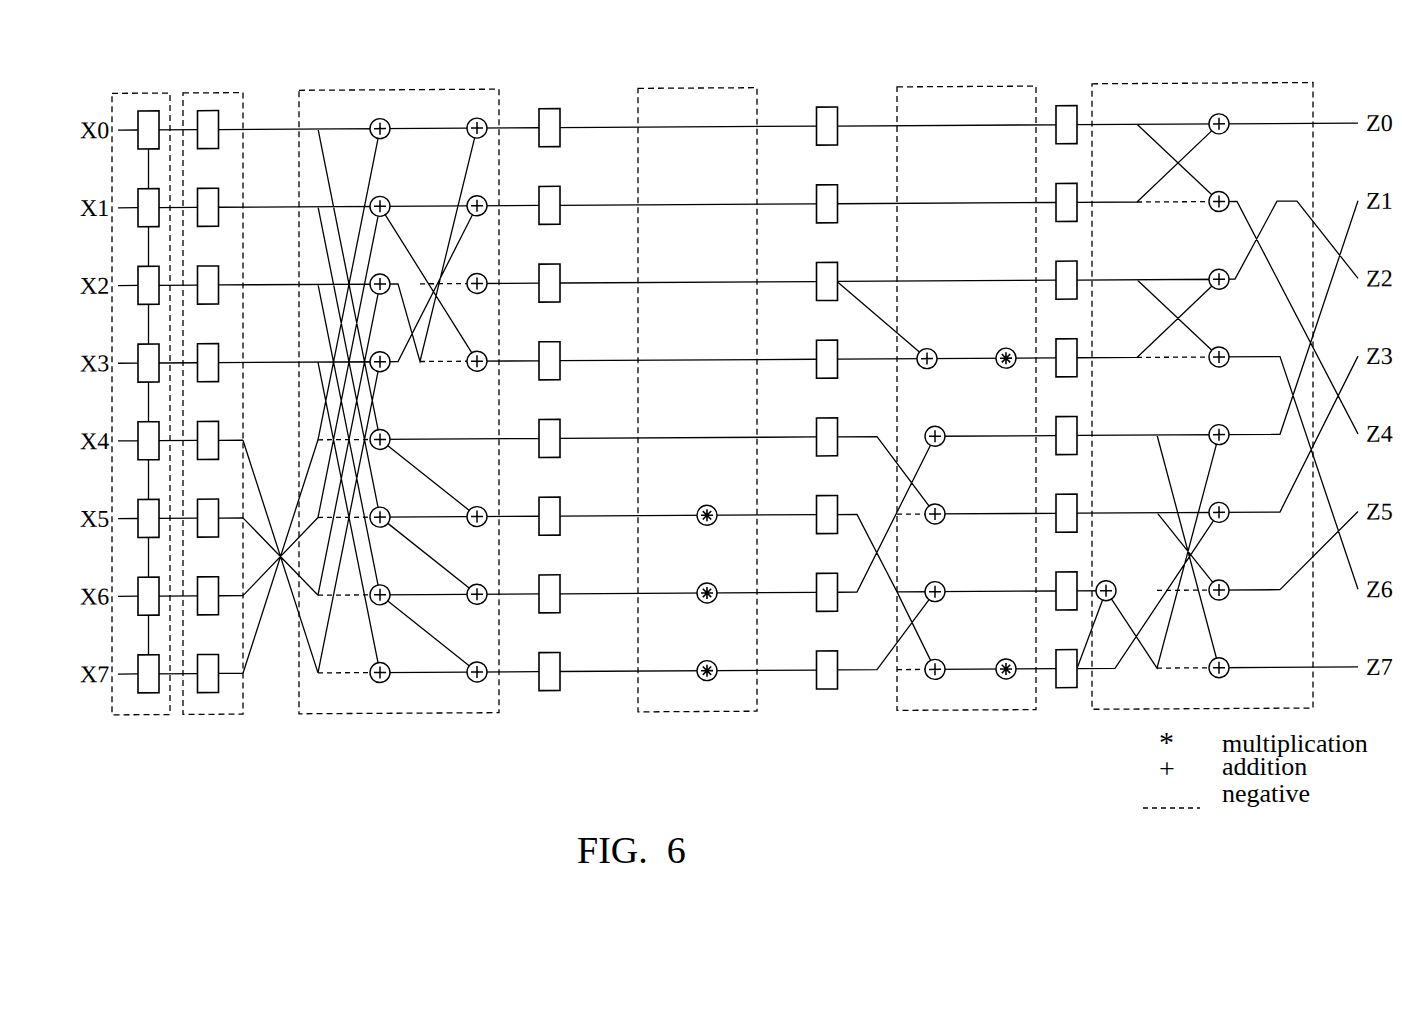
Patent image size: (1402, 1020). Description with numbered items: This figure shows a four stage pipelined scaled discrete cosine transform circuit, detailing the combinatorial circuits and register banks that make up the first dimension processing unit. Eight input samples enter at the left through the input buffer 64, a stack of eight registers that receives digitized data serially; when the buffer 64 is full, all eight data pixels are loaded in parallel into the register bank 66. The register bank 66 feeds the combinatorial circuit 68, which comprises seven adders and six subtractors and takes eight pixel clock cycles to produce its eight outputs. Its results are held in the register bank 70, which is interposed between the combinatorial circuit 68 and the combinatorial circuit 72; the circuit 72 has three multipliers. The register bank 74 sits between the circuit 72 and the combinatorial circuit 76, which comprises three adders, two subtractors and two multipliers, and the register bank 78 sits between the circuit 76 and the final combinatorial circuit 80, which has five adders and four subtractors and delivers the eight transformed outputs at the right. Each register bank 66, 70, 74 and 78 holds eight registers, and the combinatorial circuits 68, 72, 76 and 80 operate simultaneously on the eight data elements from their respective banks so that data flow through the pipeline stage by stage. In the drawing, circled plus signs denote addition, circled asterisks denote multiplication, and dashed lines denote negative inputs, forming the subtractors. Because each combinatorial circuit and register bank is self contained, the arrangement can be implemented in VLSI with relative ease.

The input buffer 64 is at (134, 716).
The register bank 66 is at (214, 716).
The combinatorial circuit 68 is at (393, 90).
The register bank 70 is at (549, 693).
The combinatorial circuit 72 is at (698, 90).
The register bank 74 is at (829, 693).
The combinatorial circuit 76 is at (974, 90).
The register bank 78 is at (1067, 693).
The combinatorial circuit 80 is at (1233, 88).